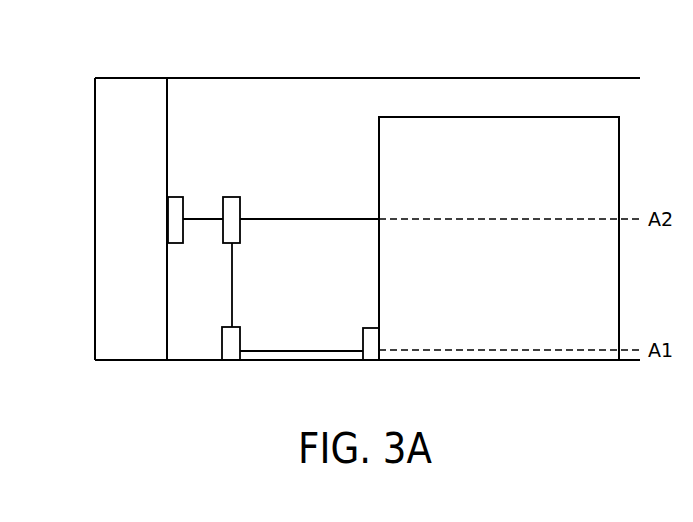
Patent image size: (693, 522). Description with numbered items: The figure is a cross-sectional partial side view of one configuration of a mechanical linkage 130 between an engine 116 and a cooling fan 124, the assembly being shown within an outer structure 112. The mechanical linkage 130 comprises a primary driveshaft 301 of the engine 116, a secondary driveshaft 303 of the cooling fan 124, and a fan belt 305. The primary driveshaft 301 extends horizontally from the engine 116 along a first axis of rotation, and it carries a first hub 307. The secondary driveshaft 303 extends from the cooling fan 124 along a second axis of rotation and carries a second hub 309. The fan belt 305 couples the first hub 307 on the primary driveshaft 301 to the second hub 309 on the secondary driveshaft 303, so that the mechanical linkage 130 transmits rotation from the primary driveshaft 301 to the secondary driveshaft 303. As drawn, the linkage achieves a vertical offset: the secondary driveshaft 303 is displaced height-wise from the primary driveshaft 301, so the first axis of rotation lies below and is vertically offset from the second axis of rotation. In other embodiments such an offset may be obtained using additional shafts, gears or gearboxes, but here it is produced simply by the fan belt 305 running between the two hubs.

The substrate 112 is at (610, 78).
The cooling fan 124 is at (142, 230).
The engine 116 is at (525, 268).
The mechanical linkage 130 is at (275, 166).
The primary driveshaft 301 is at (303, 352).
The secondary driveshaft 303 is at (205, 219).
The fan belt 305 is at (232, 296).
The first hub 307 is at (229, 348).
The second hub 309 is at (237, 196).